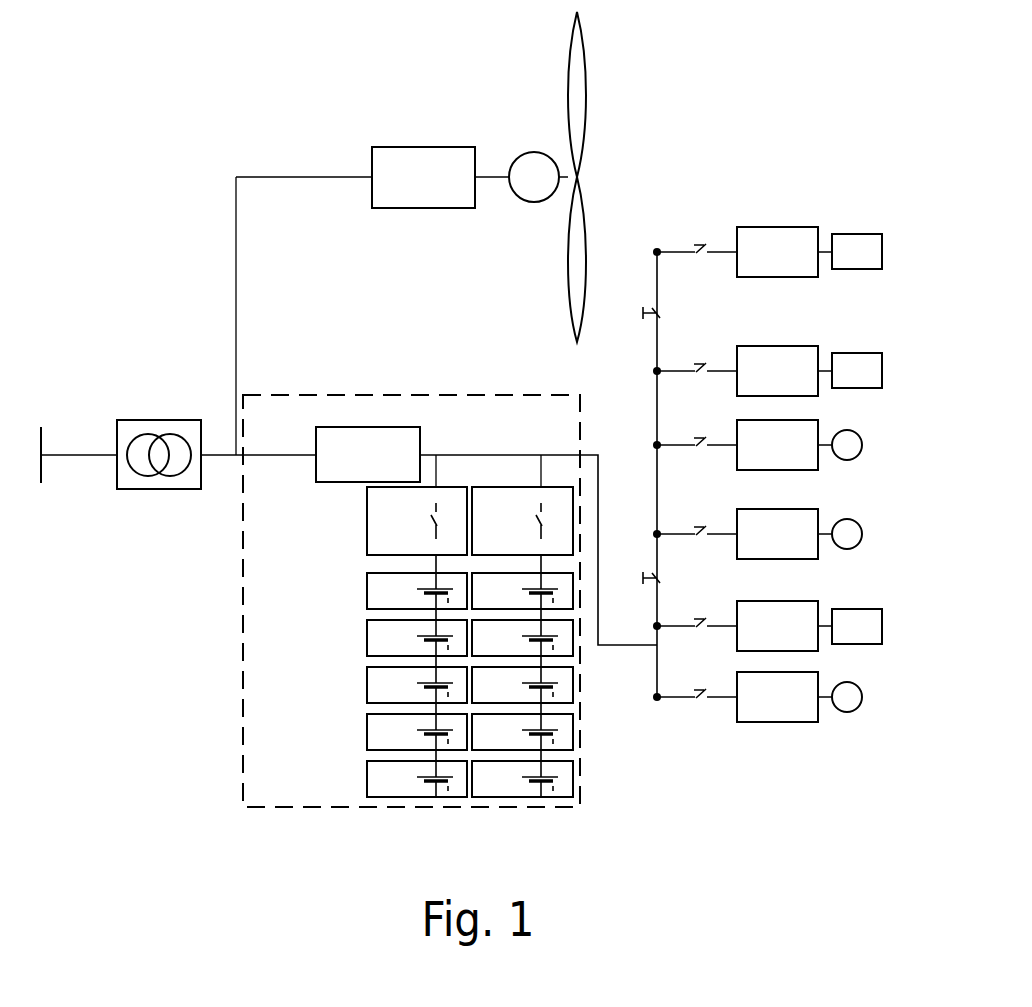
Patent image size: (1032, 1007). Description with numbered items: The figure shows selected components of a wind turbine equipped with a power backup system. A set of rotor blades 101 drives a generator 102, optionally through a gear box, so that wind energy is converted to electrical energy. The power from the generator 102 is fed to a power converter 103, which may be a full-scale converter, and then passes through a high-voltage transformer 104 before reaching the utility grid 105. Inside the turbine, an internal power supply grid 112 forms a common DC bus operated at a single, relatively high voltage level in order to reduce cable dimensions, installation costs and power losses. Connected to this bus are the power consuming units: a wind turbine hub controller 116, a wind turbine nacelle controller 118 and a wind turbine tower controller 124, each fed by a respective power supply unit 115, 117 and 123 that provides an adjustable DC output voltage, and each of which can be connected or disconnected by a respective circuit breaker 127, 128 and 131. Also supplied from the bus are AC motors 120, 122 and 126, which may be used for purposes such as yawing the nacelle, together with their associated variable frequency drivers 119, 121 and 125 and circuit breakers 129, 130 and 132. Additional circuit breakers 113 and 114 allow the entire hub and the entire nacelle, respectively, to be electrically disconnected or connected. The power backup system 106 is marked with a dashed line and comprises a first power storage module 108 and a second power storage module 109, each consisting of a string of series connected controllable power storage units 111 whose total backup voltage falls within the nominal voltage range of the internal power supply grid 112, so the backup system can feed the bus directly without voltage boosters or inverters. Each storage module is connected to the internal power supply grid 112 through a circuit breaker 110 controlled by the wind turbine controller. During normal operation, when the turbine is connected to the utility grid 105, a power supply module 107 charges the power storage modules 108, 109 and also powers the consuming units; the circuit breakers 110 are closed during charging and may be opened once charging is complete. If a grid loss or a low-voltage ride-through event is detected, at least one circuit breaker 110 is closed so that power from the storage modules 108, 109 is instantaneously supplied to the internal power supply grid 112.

The rotor blades 101 is at (582, 93).
The generator 102 is at (540, 162).
The power converter 103 is at (423, 177).
The high-voltage transformer 104 is at (132, 428).
The utility grid 105 is at (40, 470).
The power backup system 106 is at (487, 395).
The power supply module 107 is at (368, 454).
The first power storage module 108 is at (367, 812).
The second power storage module 109 is at (573, 812).
The circuit breaker 110 is at (375, 540).
The controllable power storage units 111 is at (355, 573).
The internal power supply grid 112 is at (587, 453).
The circuit breaker 113 is at (661, 312).
The circuit breaker 114 is at (658, 580).
The power supply unit 115 is at (777, 252).
The wind turbine hub controller 116 is at (855, 240).
The power supply unit 117 is at (777, 371).
The wind turbine nacelle controller 118 is at (847, 358).
The variable frequency driver 119 is at (777, 445).
The AC motor 120 is at (863, 443).
The variable frequency driver 121 is at (777, 534).
The AC motor 122 is at (863, 532).
The power supply unit 123 is at (777, 626).
The wind turbine tower controller 124 is at (865, 610).
The variable frequency driver 125 is at (777, 697).
The AC motor 126 is at (855, 713).
The circuit breaker 127 is at (698, 245).
The circuit breaker 128 is at (698, 364).
The circuit breaker 129 is at (698, 438).
The circuit breaker 130 is at (698, 527).
The circuit breaker 131 is at (698, 630).
The circuit breaker 132 is at (702, 704).